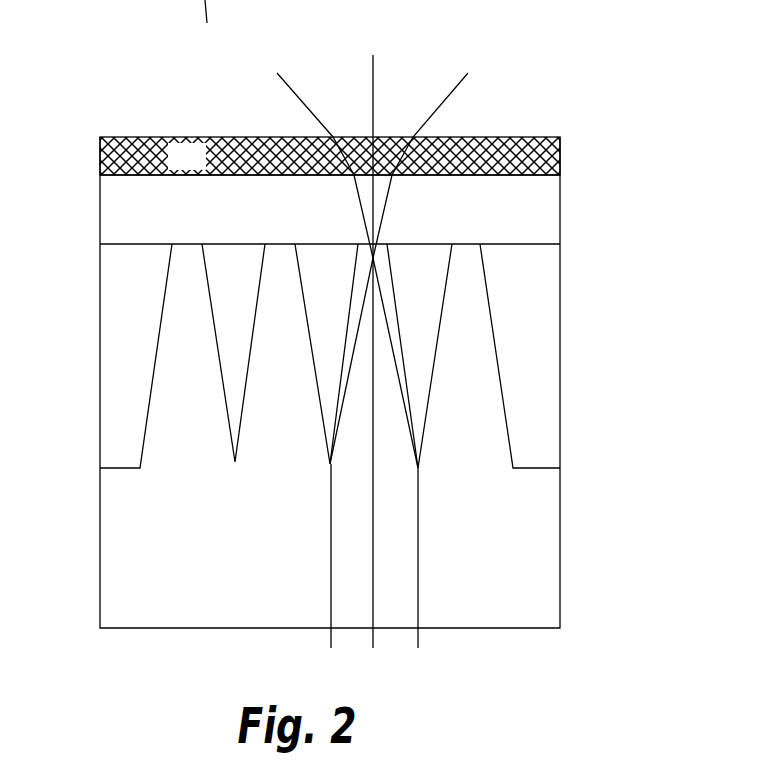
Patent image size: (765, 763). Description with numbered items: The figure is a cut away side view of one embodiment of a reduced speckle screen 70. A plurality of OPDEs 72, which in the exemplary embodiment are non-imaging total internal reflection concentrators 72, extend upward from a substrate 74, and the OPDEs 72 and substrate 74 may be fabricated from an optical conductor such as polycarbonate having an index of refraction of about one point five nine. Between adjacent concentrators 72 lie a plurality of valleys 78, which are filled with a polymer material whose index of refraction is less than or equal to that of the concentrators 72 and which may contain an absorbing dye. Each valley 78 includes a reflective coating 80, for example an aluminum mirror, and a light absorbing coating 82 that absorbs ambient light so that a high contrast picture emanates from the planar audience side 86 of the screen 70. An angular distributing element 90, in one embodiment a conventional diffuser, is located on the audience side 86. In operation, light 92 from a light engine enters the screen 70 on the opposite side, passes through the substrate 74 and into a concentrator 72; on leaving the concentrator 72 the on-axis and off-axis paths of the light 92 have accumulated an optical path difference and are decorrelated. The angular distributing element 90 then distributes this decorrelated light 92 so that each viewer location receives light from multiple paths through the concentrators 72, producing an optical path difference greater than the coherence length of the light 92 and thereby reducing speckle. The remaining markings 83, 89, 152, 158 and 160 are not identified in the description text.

The reduced speckle screen 70 is at (559, 583).
The OPDEs (non-imaging optical concentrators) 72 is at (179, 402).
The substrate 74 is at (134, 604).
The valleys 78 is at (327, 272).
The reflective coating 80 is at (537, 469).
The light absorbing coating 82 is at (523, 468).
The rear surface 83 is at (170, 628).
The audience side 86 is at (235, 137).
The prism facet 89 is at (402, 358).
The angular distributing element 90 is at (199, 167).
The light 92 is at (331, 598).
The light path 152 is at (352, 519).
The groove apex 158 is at (235, 462).
The light ray 160 is at (215, 358).